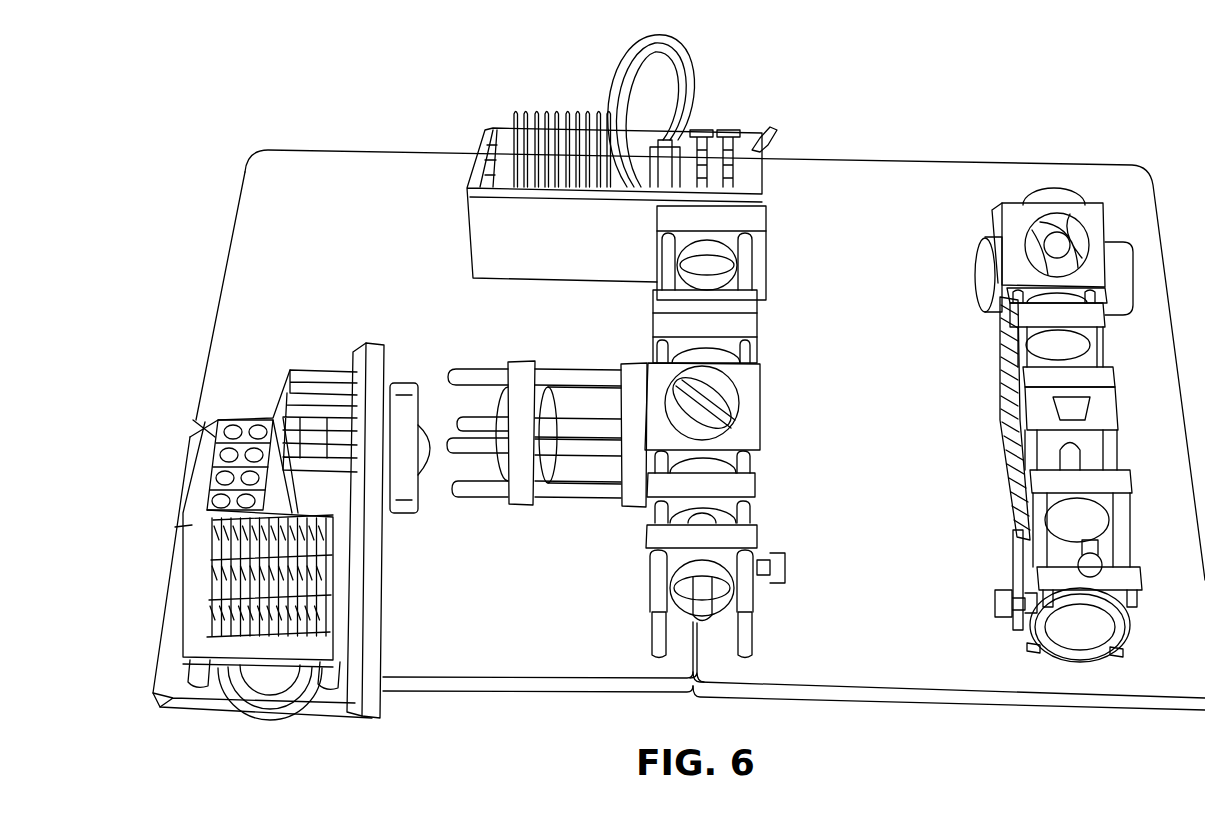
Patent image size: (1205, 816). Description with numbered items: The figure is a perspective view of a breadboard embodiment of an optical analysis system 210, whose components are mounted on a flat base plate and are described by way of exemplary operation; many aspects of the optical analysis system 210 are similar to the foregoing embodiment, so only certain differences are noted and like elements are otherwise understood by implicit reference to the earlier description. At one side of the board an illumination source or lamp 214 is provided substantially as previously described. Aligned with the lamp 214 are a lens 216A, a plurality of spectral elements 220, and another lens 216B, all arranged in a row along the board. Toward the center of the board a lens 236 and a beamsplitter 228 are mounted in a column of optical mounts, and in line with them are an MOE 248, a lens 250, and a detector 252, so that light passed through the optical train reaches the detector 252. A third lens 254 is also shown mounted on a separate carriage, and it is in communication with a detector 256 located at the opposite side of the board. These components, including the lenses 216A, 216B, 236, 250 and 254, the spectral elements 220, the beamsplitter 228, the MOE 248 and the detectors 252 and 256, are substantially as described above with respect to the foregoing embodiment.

The optical analysis system 210 is at (1018, 148).
The illumination source or lamp 214 is at (1057, 240).
The lens 216A is at (1033, 313).
The lens 216B is at (1045, 478).
The spectral elements 220 is at (1006, 375).
The beamsplitter 228 is at (727, 410).
The lens 236 is at (740, 488).
The MOE 248 is at (742, 305).
The lens 250 is at (747, 218).
The detector 252 is at (702, 130).
The third lens 254 is at (541, 397).
The detector 256 is at (360, 370).